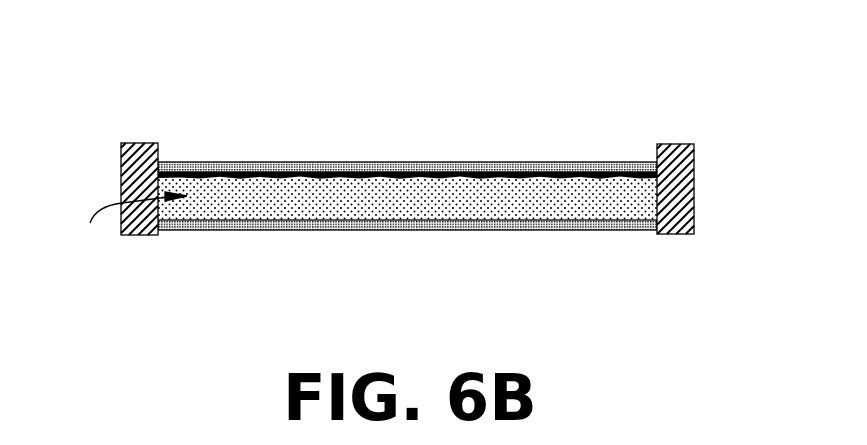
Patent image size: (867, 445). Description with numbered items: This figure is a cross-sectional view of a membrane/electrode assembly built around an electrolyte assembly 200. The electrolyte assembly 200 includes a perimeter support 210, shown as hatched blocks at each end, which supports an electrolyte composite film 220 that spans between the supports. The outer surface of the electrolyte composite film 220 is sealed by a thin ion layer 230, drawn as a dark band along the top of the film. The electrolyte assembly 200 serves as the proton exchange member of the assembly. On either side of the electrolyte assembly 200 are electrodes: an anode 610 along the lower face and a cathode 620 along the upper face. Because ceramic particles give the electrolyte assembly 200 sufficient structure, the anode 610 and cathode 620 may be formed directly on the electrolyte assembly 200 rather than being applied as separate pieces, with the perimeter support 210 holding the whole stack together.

The electrolyte assembly 200 is at (127, 225).
The perimeter support 210 is at (138, 143).
The electrolyte composite film 220 is at (290, 202).
The thin ion layer 230 is at (383, 172).
The anode 610 is at (342, 232).
The cathode 620 is at (303, 160).